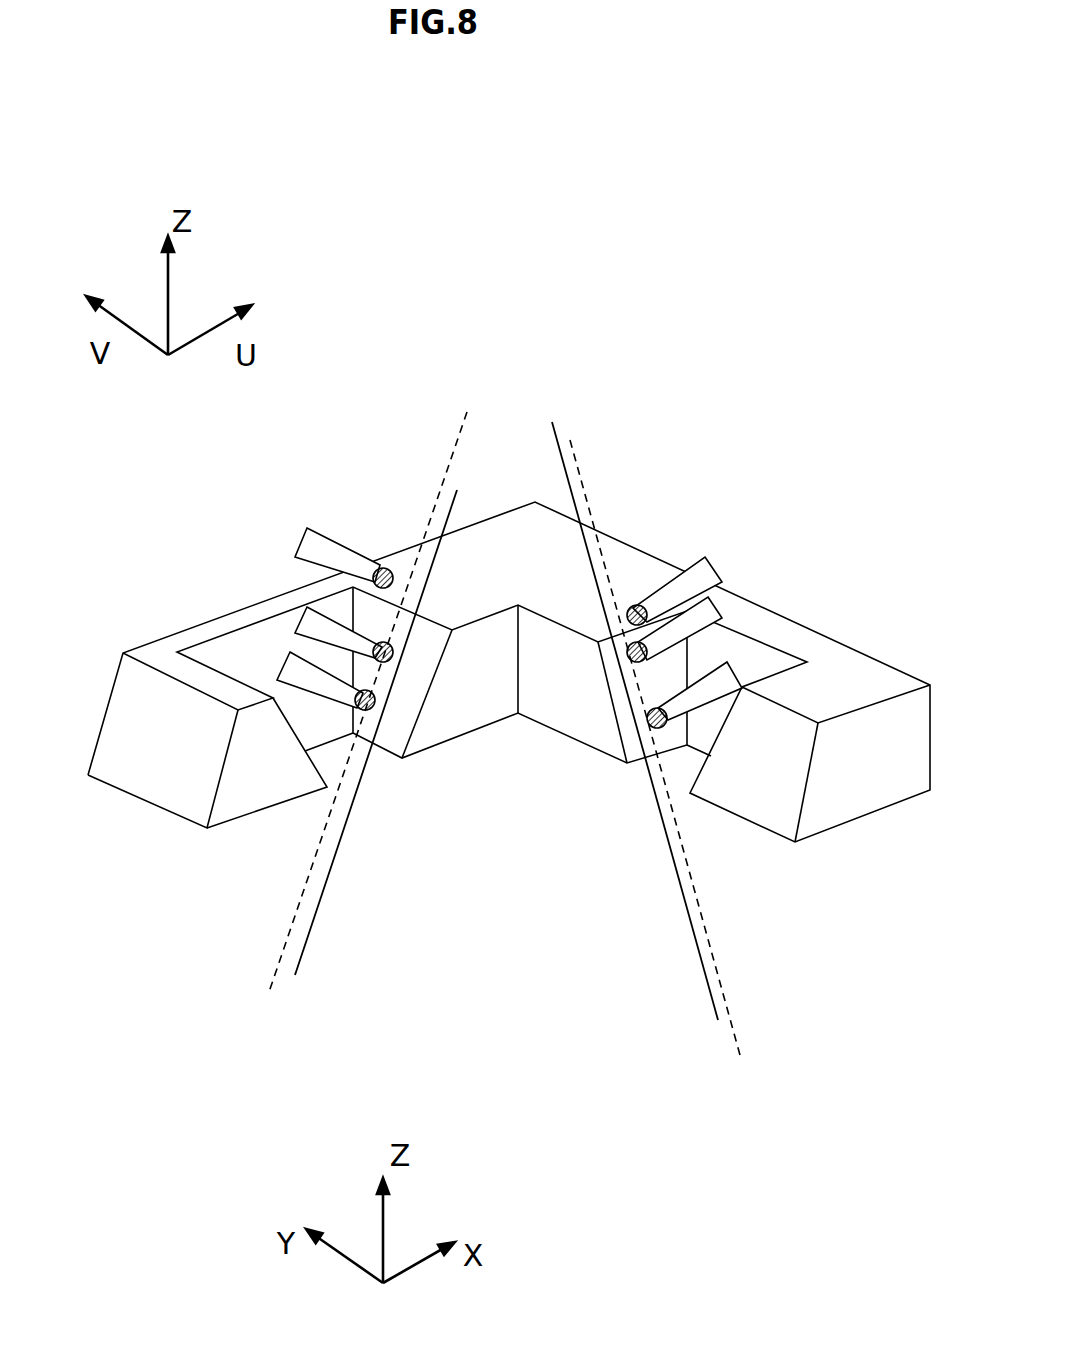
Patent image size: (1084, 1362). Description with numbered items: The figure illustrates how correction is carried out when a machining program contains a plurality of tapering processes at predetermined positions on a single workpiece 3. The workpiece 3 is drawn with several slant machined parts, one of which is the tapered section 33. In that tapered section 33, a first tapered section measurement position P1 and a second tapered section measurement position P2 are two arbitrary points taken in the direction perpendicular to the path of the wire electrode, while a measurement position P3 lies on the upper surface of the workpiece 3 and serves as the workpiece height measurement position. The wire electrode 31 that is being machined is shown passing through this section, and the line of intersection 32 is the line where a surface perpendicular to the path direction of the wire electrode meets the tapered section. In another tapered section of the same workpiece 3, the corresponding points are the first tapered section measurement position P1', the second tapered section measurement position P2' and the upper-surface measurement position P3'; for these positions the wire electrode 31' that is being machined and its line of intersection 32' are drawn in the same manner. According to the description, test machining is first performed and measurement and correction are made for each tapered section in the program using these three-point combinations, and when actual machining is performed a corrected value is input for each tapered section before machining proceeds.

The workpiece 3 is at (840, 665).
The wire electrode 31 is at (397, 716).
The line of intersection 32 is at (367, 703).
The wire electrode 31' is at (610, 721).
The line of intersection 32' is at (655, 741).
The tapered section 33 is at (396, 780).
The first tapered section measurement position P1 is at (299, 775).
The second tapered section measurement position P2 is at (310, 562).
The workpiece height measurement position P3 is at (344, 518).
The first tapered section measurement position P1' is at (713, 601).
The second tapered section measurement position P2' is at (711, 781).
The measurement position on upper surface of workpiece P3' is at (674, 542).